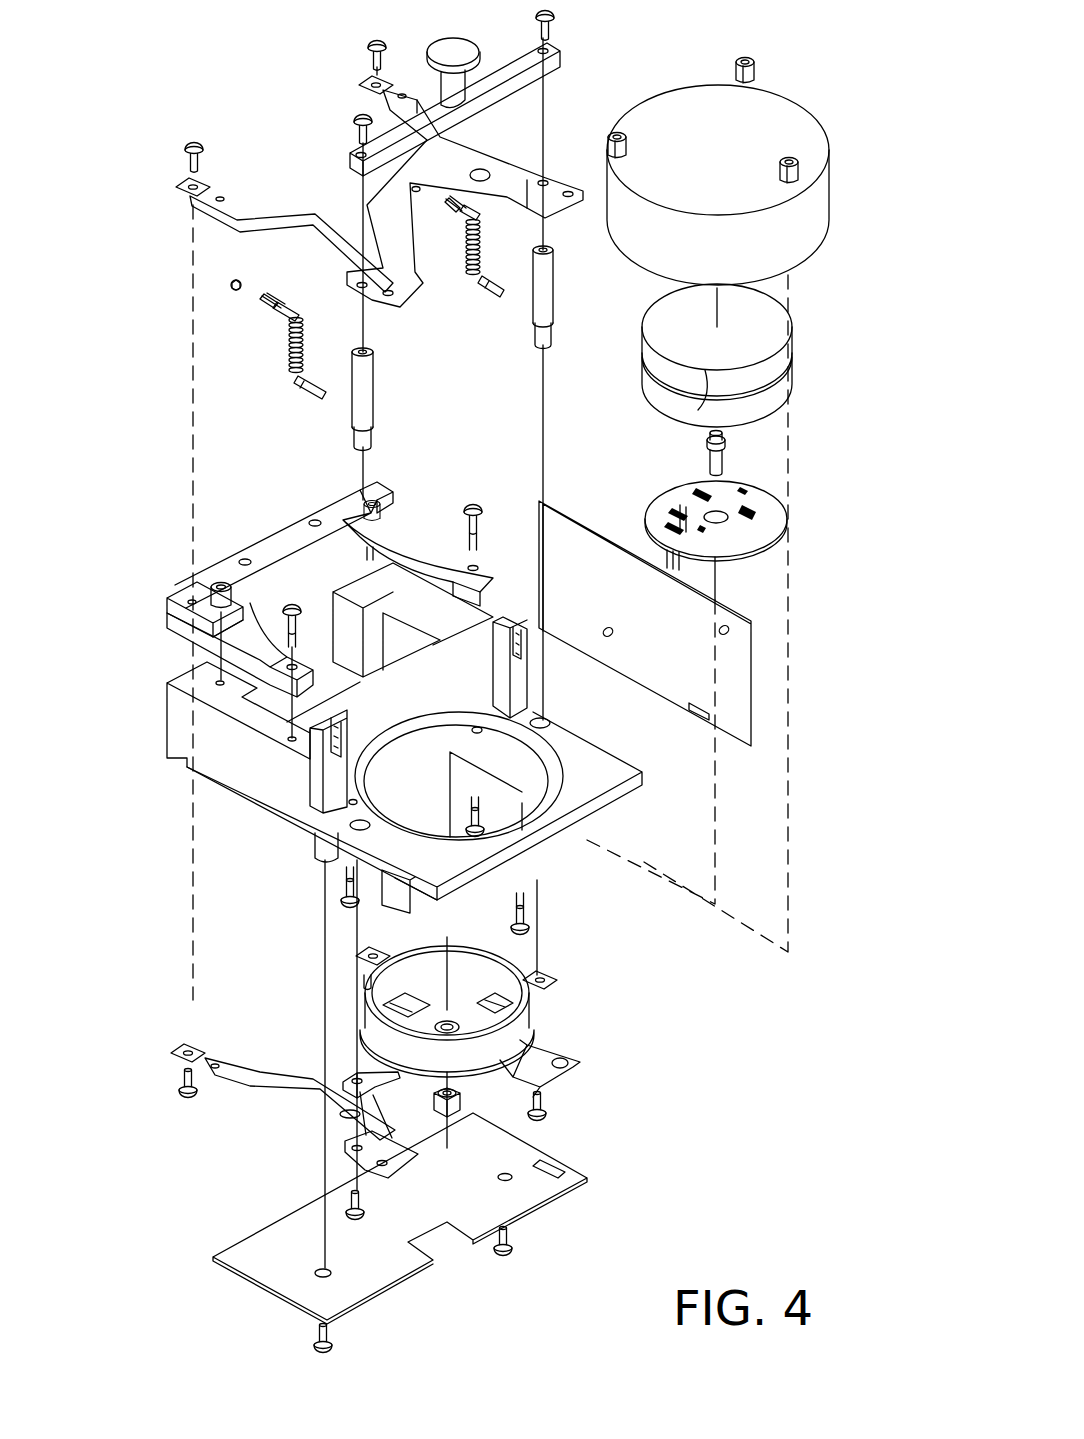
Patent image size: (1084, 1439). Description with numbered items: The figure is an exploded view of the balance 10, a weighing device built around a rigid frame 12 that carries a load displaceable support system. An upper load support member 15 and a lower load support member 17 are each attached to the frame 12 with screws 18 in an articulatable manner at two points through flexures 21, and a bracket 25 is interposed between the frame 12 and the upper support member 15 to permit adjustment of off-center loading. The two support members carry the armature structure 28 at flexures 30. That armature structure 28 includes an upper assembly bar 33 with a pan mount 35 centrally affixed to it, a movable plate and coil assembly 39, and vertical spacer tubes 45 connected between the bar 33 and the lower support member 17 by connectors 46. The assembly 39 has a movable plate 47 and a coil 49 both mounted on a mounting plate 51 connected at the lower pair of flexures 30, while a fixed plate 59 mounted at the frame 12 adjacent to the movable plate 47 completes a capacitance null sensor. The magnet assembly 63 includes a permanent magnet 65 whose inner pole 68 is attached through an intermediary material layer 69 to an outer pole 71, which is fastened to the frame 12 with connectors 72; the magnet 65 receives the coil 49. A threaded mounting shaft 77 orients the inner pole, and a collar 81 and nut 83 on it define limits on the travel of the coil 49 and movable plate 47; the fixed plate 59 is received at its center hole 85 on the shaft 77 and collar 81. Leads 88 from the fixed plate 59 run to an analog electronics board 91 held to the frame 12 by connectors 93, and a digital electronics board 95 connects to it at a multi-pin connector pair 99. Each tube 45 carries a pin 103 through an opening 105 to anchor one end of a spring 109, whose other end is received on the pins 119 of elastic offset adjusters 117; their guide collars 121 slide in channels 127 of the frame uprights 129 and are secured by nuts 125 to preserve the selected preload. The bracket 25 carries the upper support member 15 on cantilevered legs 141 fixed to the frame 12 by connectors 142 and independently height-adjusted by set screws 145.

The balance 10 is at (181, 486).
The rigid frame 12 is at (177, 720).
The upper load support member 15 is at (258, 218).
The lower load support member 17 is at (237, 1088).
The screws 18 is at (375, 48).
The flexures 21 is at (362, 88).
The bracket 25 is at (303, 540).
The armature structure 28 is at (492, 55).
The flexures 30 is at (545, 186).
The upper assembly bar 33 is at (560, 58).
The pan mount 35 is at (452, 55).
The movable plate and coil assembly 39 is at (526, 964).
The vertical spacer tubes 45 is at (372, 393).
The connectors 46 is at (553, 22).
The movable plate 47 is at (467, 1000).
The coil 49 is at (557, 1033).
The mounting plate 51 is at (562, 985).
The fixed plate 59 is at (776, 498).
The magnet assembly 63 is at (818, 330).
The permanent magnet 65 is at (768, 325).
The inner pole 68 is at (705, 370).
The intermediary material layer 69 is at (645, 360).
The outer pole 71 is at (820, 208).
The connectors 72 is at (468, 803).
The mounting shaft 77 is at (724, 462).
The collar 81 is at (705, 444).
The nut 83 is at (463, 1102).
The center hole 85 is at (727, 525).
The leads 88 is at (664, 547).
The analog electronics board 91 is at (535, 1190).
The connectors 93 is at (500, 1250).
The digital electronics board 95 is at (659, 673).
The multi-pin connector pair 99 is at (696, 716).
The pin 103 is at (302, 394).
The opening 105 is at (370, 425).
The springs 109 is at (292, 355).
The elastic offset adjusters 117 is at (273, 310).
The pins 119 is at (267, 296).
The guide collars 121 is at (288, 310).
The nuts 125 is at (230, 283).
The channels 127 is at (347, 716).
The uprights 129 is at (316, 748).
The cantilevered legs 141 is at (248, 655).
The connectors 142 is at (473, 508).
The set screws 145 is at (378, 503).